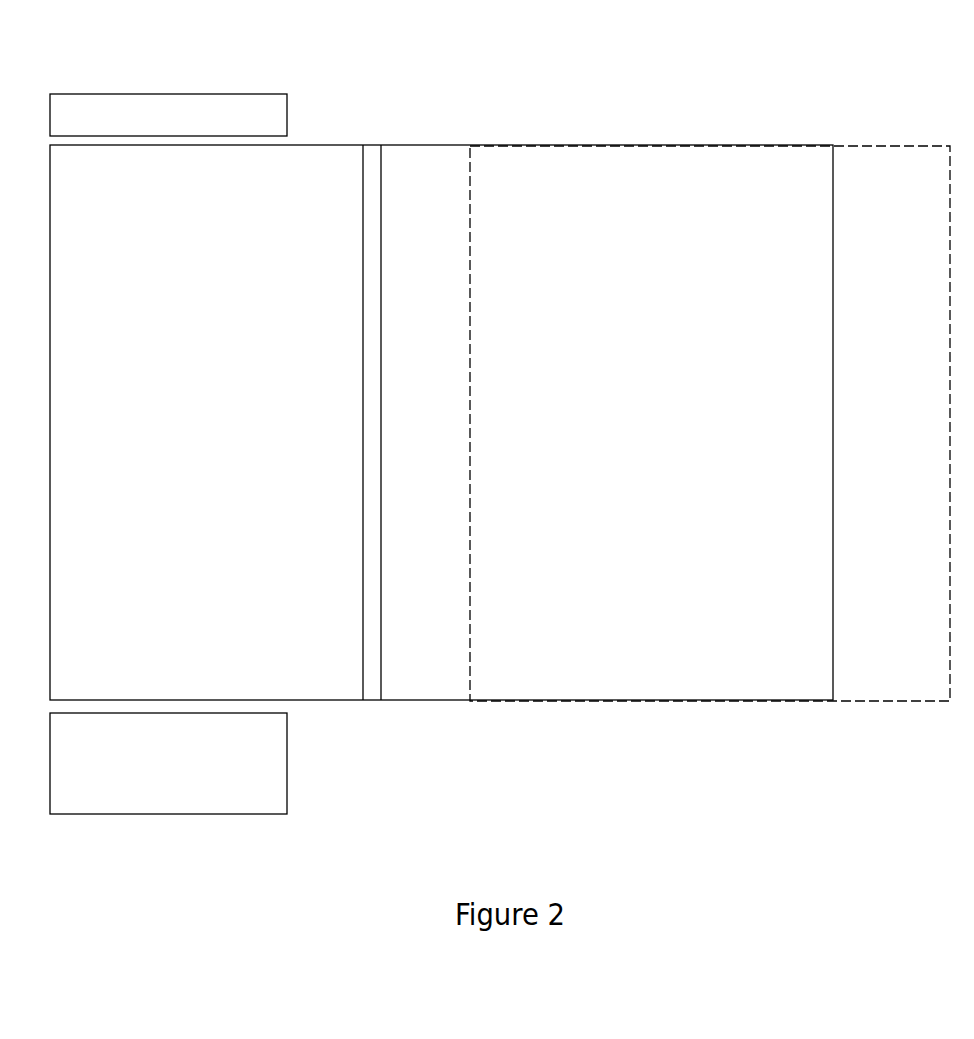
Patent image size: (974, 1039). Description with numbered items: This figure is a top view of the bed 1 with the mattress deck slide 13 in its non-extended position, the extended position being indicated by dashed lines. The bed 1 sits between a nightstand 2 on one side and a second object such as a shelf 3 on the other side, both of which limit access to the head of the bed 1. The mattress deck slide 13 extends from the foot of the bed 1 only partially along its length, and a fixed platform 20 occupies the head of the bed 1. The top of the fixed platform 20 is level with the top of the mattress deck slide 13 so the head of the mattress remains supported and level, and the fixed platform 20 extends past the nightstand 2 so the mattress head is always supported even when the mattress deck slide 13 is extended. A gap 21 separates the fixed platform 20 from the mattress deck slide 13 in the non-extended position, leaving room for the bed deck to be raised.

The bed 1 is at (500, 478).
The nightstand 2 is at (230, 789).
The shelf 3 is at (170, 110).
The mattress deck slide 13 is at (636, 389).
The fixed platform 20 is at (171, 358).
The gap 21 is at (366, 167).